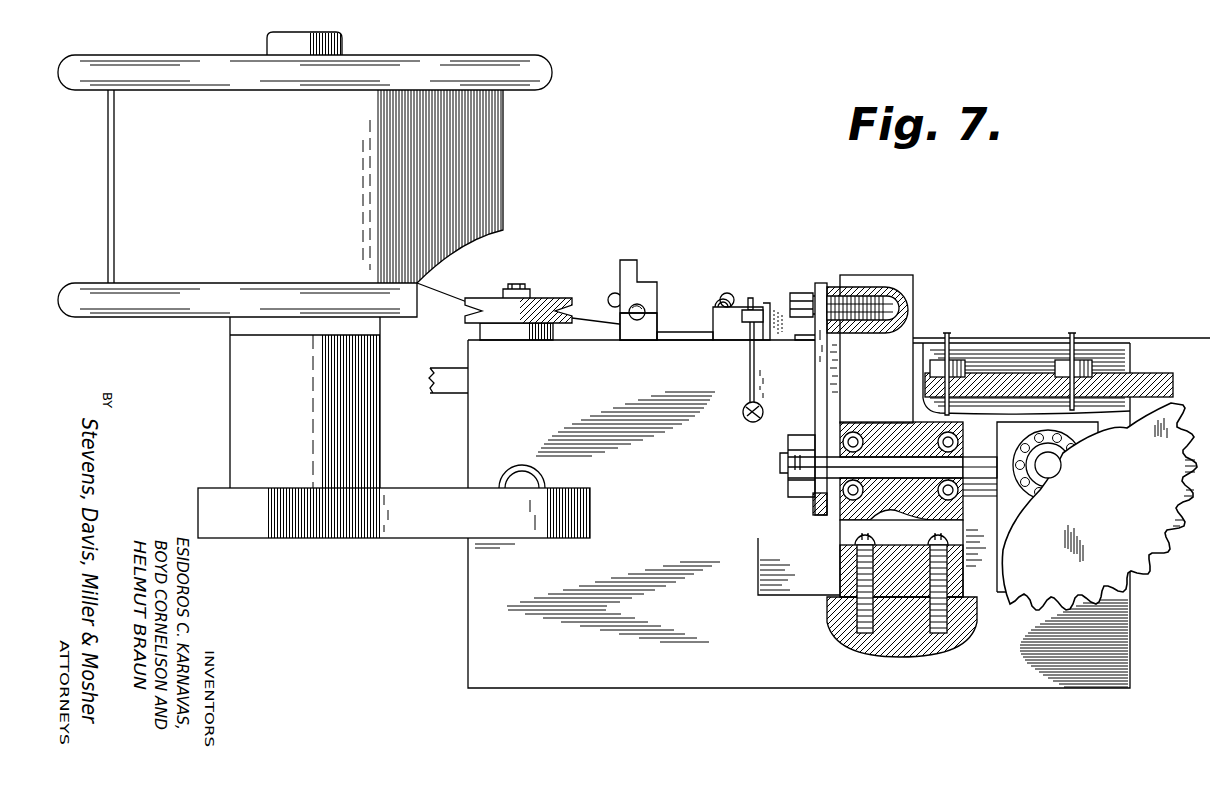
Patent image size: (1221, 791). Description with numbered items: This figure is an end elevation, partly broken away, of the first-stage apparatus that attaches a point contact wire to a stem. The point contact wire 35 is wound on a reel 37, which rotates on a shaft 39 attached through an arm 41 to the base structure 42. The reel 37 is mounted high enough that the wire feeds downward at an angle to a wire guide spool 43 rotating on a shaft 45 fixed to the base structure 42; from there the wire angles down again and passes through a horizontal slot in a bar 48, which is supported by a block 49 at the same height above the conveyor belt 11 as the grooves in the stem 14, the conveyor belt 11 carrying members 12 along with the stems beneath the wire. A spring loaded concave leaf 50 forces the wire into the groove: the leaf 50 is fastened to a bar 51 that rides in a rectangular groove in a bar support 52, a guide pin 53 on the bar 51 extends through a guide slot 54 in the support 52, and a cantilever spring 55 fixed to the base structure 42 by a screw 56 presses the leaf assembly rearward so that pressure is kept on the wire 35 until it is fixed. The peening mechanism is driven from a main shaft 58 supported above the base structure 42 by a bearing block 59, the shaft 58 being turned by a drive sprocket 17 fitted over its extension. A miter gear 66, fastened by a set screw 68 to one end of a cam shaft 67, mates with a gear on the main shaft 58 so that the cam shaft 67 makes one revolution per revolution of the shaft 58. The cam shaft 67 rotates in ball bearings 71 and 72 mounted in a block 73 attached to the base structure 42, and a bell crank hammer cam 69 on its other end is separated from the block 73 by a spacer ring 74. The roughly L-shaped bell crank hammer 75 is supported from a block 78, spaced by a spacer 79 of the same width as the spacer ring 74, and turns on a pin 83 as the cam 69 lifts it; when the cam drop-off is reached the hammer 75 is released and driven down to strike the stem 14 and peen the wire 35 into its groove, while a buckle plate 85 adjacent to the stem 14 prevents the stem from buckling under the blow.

The conveyor belt 11 is at (1173, 385).
The clamp blocks 12 is at (946, 366).
The stem 14 is at (1072, 333).
The drive sprocket 17 is at (1178, 551).
The point contact wire 35 is at (1162, 336).
The reel 37 is at (503, 180).
The shaft 39 is at (234, 391).
The arm 41 is at (416, 540).
The base structure 42 is at (617, 681).
The wire guide spool 43 is at (470, 298).
The shaft 45 is at (517, 288).
The bar 48 is at (629, 259).
The block 49 is at (627, 322).
The spring loaded concave leaf 50 is at (781, 320).
The bar 51 is at (752, 325).
The bar support 52 is at (725, 318).
The guide pin 53 is at (747, 300).
The guide slot 54 is at (721, 303).
The cantilever spring 55 is at (750, 380).
The screw 56 is at (750, 420).
The main shaft 58 is at (1057, 470).
The bearing block 59 is at (1093, 430).
The miter gear 66 is at (1002, 491).
The cam shaft 67 is at (781, 464).
The set screw 68 is at (1000, 482).
The bell crank hammer cam 69 is at (813, 509).
The ball bearing 71 is at (962, 405).
The ball bearing 72 is at (853, 420).
The block 73 is at (886, 420).
The spacer ring 74 is at (838, 521).
The bell crank hammer 75 is at (821, 287).
The block 78 is at (900, 278).
The spacer 79 is at (846, 288).
The pin 83 is at (793, 294).
The buckle plate 85 is at (807, 342).